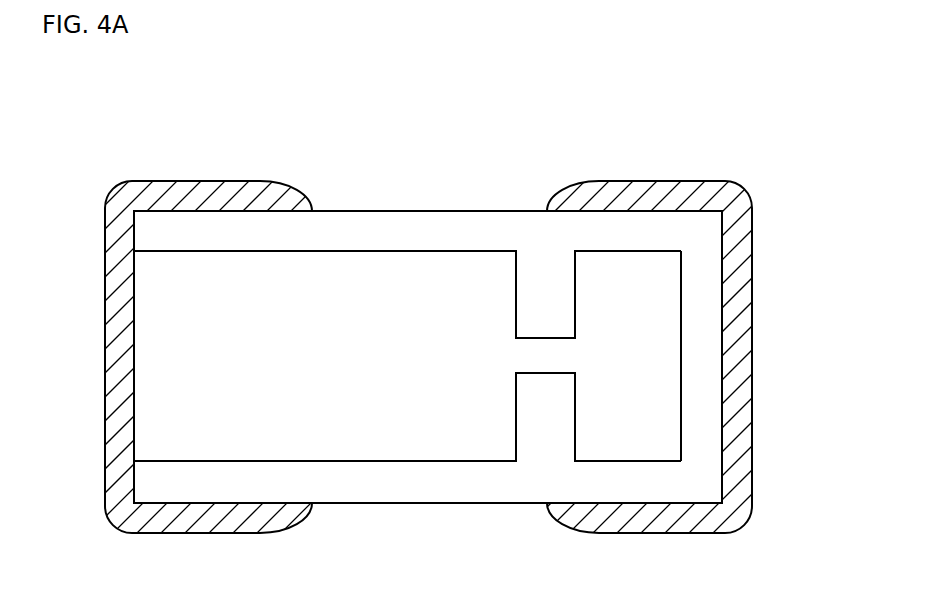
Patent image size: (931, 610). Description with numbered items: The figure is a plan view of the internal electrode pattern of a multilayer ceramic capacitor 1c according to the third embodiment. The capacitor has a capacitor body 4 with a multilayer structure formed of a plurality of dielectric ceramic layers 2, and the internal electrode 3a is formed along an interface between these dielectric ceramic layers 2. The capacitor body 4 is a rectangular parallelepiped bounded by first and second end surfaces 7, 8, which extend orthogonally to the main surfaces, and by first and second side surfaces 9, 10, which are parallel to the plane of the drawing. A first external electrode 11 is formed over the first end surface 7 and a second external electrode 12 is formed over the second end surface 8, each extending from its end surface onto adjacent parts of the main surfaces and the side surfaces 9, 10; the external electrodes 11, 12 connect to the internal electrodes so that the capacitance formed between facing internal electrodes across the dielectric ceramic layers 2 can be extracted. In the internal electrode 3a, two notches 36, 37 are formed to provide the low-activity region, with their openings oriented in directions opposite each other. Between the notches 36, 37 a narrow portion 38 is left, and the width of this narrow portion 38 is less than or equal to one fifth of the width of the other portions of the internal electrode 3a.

The multilayer ceramic capacitor 1c is at (117, 113).
The dielectric ceramic layer 2 is at (705, 230).
The internal electrode 3a is at (694, 352).
The capacitor body 4 is at (400, 199).
The first end surface 7 is at (132, 400).
The second end surface 8 is at (723, 397).
The first side surface 9 is at (348, 210).
The second side surface 10 is at (376, 503).
The first external electrode 11 is at (112, 331).
The second external electrode 12 is at (745, 282).
The notch 36 is at (540, 275).
The notch 37 is at (548, 442).
The narrow portion 38 is at (539, 360).